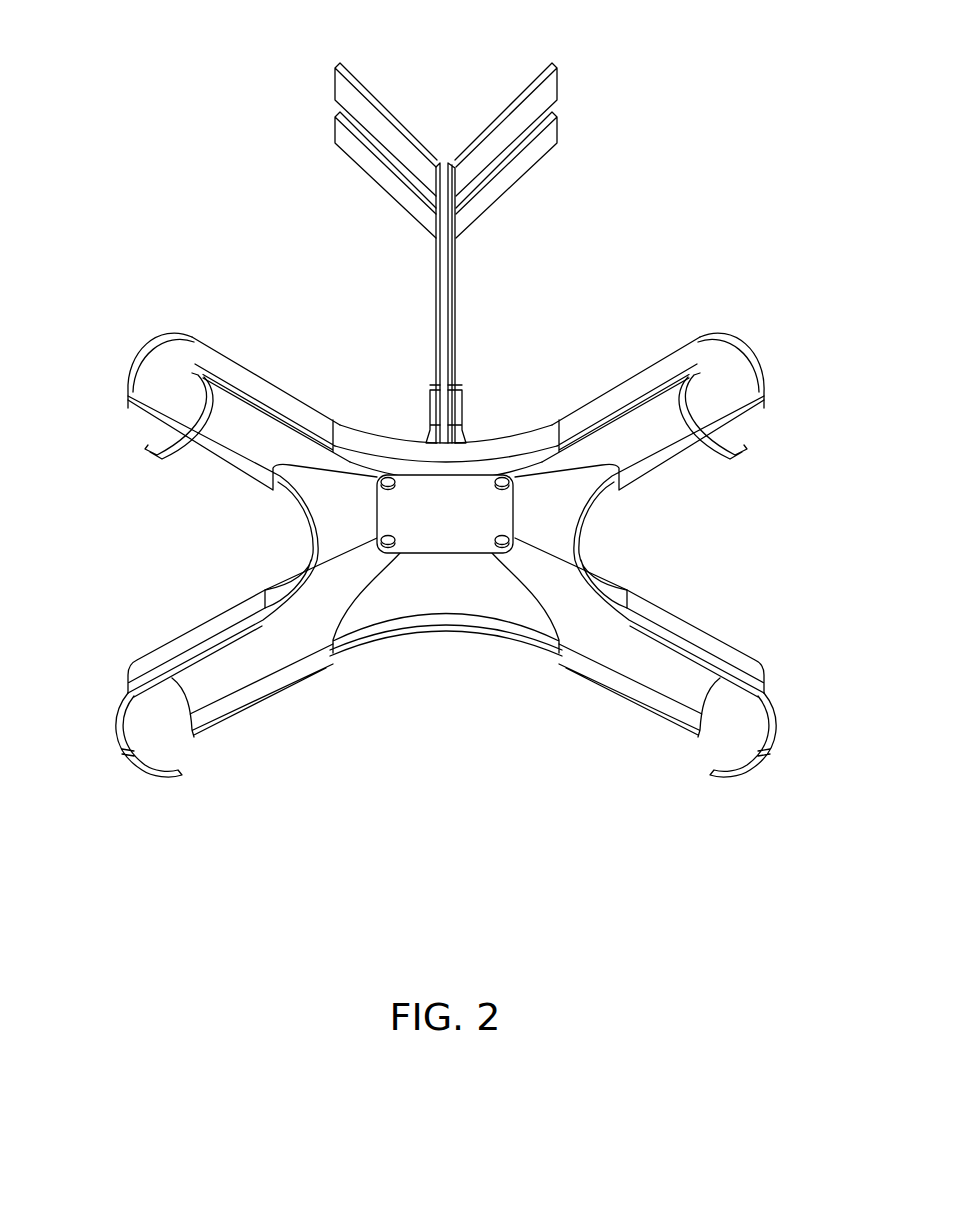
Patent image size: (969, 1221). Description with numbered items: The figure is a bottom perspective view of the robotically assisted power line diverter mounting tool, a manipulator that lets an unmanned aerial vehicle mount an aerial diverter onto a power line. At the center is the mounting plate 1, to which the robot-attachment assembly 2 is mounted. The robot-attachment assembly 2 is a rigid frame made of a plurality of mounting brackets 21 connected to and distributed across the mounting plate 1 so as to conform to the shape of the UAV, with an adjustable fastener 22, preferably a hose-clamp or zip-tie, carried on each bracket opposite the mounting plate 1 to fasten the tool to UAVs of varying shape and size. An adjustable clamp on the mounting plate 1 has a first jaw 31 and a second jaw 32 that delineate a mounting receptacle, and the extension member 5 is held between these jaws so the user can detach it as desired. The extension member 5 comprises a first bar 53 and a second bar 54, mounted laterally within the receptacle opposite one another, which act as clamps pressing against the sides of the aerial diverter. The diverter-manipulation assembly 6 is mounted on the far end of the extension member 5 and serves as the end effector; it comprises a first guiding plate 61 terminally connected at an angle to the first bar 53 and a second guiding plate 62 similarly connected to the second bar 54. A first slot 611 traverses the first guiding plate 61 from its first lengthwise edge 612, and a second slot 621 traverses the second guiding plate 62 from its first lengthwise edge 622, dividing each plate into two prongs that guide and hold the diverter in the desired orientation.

The mounting plate 1 is at (442, 545).
The robot-attachment assembly 2 is at (416, 690).
The mounting brackets 21 is at (255, 378).
The adjustable fasteners 22 is at (165, 458).
The first jaw 31 is at (430, 410).
The second jaw 32 is at (462, 400).
The extension member 5 is at (370, 268).
The first bar 53 is at (437, 350).
The second bar 54 is at (453, 295).
The diverter-manipulation assembly 6 is at (190, 156).
The first guiding plate 61 is at (372, 163).
The first slot 611 is at (343, 115).
The first lengthwise edge 612 is at (326, 84).
The right wing 62 is at (520, 163).
The right lower wing plate 621 is at (549, 115).
The first lengthwise edge 622 is at (566, 84).